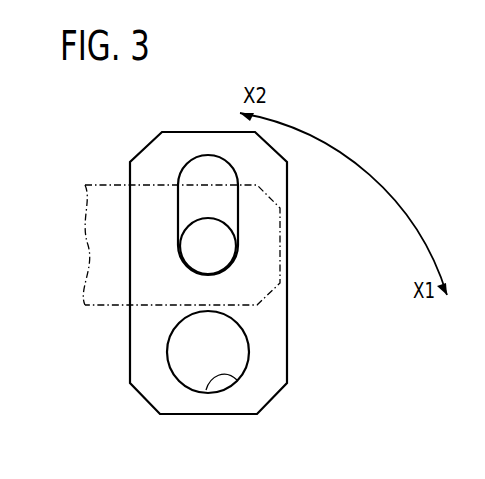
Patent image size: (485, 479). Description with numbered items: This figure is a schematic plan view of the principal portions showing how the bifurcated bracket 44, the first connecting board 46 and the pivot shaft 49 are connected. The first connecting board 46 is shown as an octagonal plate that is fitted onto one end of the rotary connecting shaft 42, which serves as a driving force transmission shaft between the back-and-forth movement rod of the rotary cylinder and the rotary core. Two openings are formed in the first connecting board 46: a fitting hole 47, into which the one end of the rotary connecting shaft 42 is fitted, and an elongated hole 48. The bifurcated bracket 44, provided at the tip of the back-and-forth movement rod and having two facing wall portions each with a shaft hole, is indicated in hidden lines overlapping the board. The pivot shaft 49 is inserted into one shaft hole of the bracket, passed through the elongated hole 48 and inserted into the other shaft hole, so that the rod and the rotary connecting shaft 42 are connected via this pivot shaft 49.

The rotary connecting shaft 42 is at (237, 343).
The bifurcated bracket 44 is at (95, 217).
The first connecting board 46 is at (145, 355).
The fitting hole 47 is at (206, 390).
The elongated hole 48 is at (232, 169).
The pivot shaft 49 is at (213, 245).